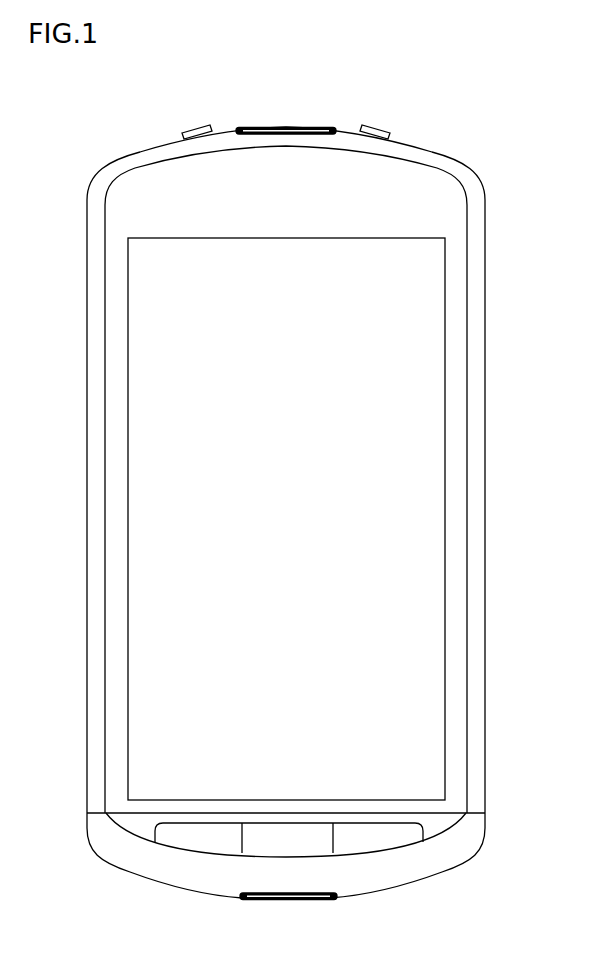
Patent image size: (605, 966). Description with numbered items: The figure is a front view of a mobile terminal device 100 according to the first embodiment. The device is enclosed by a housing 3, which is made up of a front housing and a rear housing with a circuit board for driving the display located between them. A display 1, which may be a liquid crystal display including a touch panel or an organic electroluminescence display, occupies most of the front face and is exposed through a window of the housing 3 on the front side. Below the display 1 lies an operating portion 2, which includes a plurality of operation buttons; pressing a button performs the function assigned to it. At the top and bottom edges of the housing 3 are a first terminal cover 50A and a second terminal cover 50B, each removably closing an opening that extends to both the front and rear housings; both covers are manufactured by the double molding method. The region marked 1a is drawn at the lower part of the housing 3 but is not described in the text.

The mobile terminal device 100 is at (469, 111).
The display 1 is at (158, 524).
The lower housing portion 1a is at (435, 862).
The operating portion 2 is at (200, 838).
The housing 3 is at (88, 453).
The first terminal cover 50A is at (281, 127).
The second terminal cover 50B is at (289, 902).